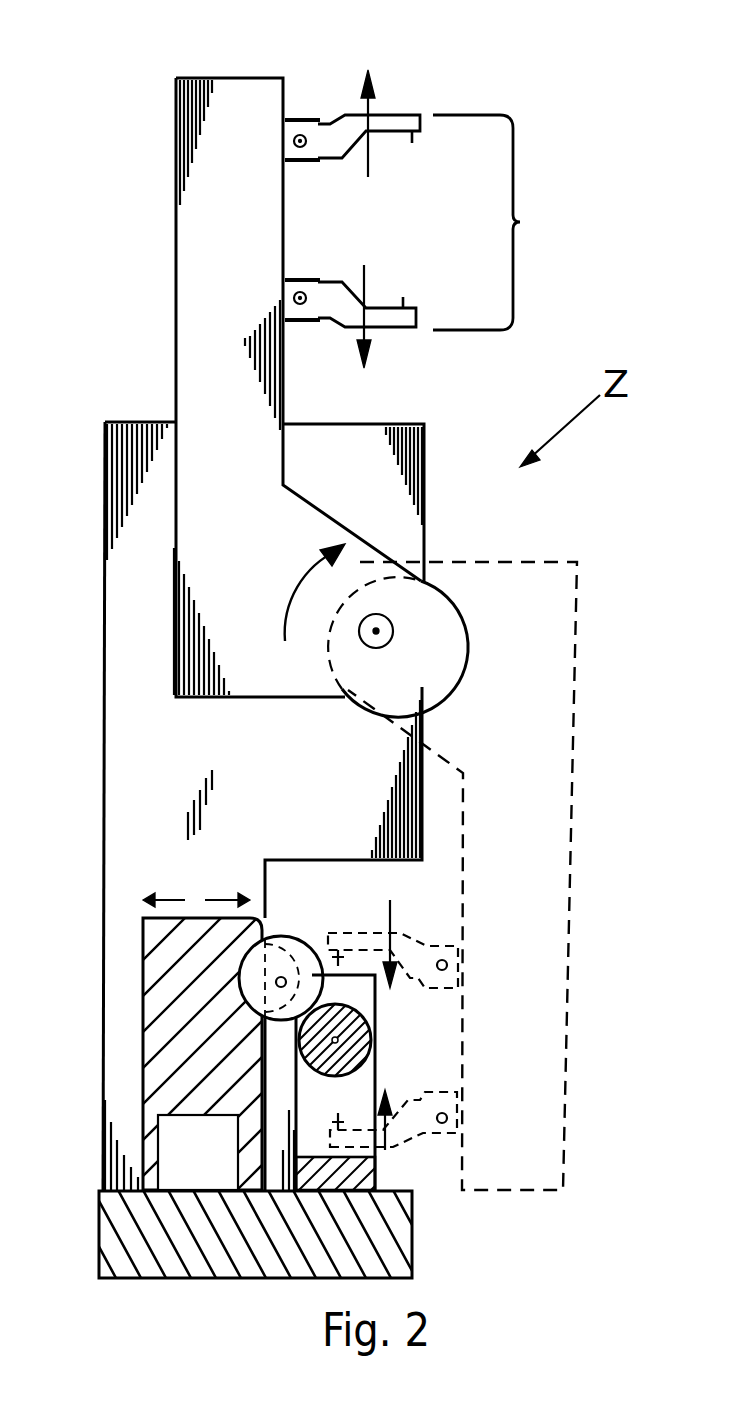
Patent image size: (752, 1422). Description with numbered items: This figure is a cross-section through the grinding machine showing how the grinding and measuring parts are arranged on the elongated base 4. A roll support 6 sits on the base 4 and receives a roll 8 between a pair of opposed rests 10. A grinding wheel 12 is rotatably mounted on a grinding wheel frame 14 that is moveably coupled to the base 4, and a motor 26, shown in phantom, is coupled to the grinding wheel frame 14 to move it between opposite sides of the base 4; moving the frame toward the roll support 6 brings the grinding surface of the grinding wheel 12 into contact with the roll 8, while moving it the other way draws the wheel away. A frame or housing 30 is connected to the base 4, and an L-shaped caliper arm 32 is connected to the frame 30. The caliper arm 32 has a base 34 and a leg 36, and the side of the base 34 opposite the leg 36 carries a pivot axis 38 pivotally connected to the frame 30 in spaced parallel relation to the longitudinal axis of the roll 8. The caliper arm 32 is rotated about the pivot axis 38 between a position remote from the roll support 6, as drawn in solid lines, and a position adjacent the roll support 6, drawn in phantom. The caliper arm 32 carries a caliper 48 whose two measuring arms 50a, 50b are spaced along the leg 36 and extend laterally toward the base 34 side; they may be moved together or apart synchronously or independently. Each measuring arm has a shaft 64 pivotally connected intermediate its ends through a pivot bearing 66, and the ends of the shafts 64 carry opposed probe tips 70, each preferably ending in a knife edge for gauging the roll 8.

The base 4 is at (143, 1278).
The roll support 6 is at (412, 1073).
The roll 8 is at (373, 1073).
The rests 10 is at (376, 996).
The grinding wheel 12 is at (305, 938).
The grinding wheel frame 14 is at (143, 1032).
The motor 26 is at (182, 1175).
The frame or housing 30 is at (424, 500).
The L-shaped caliper arm 32 is at (253, 72).
The base of caliper arm 34 is at (308, 698).
The leg of caliper arm 36 is at (176, 283).
The pivot axis 38 is at (380, 634).
The caliper 48 is at (505, 222).
The measuring arm 50a is at (410, 347).
The measuring arm 50b is at (397, 105).
The shaft 64 is at (390, 134).
The pivot bearing 66 is at (307, 146).
The probe tip 70 is at (413, 140).